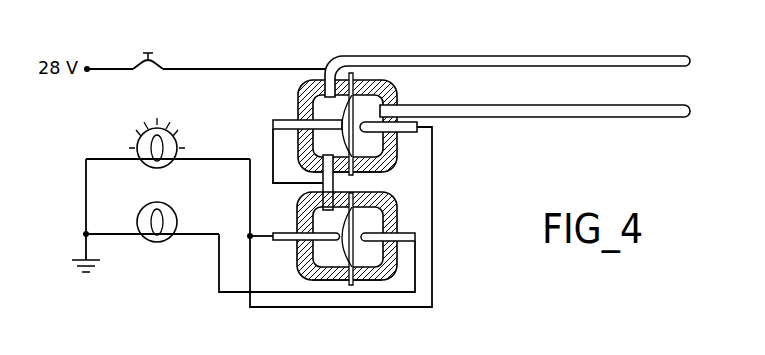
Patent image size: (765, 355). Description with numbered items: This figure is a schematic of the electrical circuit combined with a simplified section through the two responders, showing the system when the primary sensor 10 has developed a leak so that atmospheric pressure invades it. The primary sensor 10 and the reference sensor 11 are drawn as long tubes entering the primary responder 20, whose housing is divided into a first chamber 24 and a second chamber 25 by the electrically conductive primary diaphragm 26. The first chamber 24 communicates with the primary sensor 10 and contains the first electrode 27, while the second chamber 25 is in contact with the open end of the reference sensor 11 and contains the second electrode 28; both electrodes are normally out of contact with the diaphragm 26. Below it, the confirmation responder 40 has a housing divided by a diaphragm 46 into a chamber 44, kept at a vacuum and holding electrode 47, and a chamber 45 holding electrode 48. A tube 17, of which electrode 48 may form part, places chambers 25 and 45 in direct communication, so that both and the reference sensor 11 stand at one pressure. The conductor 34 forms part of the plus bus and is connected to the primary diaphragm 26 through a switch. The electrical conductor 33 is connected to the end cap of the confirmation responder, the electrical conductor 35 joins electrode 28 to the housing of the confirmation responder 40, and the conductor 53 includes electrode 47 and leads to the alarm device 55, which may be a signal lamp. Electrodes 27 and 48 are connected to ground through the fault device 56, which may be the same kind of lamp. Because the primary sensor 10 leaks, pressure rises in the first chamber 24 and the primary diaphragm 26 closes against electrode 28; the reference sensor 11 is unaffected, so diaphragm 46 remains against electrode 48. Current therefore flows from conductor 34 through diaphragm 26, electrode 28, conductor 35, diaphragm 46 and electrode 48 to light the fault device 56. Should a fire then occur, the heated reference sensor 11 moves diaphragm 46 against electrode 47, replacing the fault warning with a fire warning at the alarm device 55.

The primary sensor 10 is at (548, 118).
The reference sensor 11 is at (548, 57).
The tube 17 is at (322, 175).
The primary responder 20 is at (333, 126).
The first chamber 24 is at (377, 101).
The second chamber 25 is at (320, 111).
The primary diaphragm 26 is at (388, 171).
The first electrode 27 is at (405, 131).
The second electrode 28 is at (273, 121).
The electrical conductor 33 is at (338, 308).
The conductor 34 is at (222, 69).
The electrical conductor 35 is at (273, 152).
The confirmation responder 40 is at (334, 244).
The chamber 44 is at (381, 203).
The chamber 45 is at (317, 262).
The diaphragm 46 is at (374, 274).
The electrode 47 is at (376, 231).
The electrode 48 is at (300, 238).
The electrical conductor 53 is at (219, 290).
The alarm device 55 is at (140, 214).
The fault device 56 is at (168, 164).